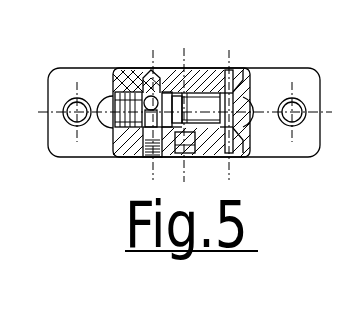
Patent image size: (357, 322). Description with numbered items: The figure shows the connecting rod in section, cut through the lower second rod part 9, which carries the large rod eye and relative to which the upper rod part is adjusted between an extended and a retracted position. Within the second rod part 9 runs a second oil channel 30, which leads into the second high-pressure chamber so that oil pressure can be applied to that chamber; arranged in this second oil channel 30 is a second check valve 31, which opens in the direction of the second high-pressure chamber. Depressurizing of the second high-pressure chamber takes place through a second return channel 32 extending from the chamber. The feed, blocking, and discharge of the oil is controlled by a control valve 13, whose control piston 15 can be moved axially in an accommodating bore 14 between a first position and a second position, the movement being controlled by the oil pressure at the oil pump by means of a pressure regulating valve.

The second check valve 31 is at (116, 73).
The second oil channel 30 is at (148, 80).
The accommodating bore 14 is at (184, 90).
The control valve 13 is at (198, 94).
The second rod part 9 is at (232, 85).
The control piston 15 is at (193, 150).
The second return channel 32 is at (240, 148).